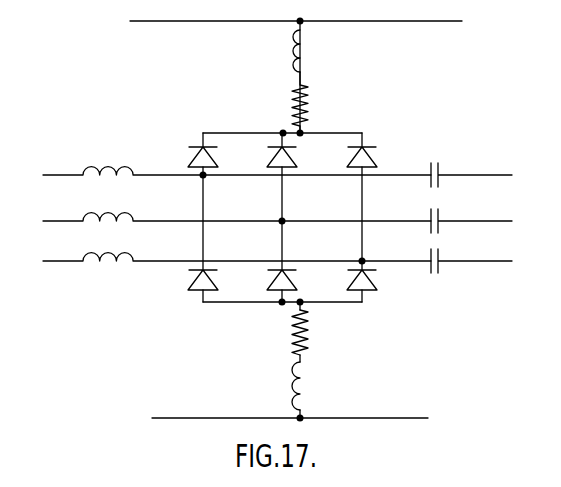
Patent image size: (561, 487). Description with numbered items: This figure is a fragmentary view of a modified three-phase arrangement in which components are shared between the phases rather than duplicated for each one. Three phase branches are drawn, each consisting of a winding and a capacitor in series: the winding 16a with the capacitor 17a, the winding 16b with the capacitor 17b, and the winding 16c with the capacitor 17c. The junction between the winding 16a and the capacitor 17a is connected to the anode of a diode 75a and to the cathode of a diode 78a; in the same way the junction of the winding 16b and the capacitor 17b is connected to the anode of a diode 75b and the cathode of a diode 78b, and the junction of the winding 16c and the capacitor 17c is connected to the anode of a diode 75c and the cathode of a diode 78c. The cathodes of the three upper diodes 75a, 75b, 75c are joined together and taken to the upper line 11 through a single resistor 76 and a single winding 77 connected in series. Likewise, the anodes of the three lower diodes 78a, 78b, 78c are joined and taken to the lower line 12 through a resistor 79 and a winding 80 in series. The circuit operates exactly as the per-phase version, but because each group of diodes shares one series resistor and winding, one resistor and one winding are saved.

The line 11 is at (430, 21).
The line 12 is at (393, 418).
The winding 16a is at (108, 165).
The winding 16b is at (102, 212).
The winding 16c is at (102, 252).
The capacitor 17a is at (440, 160).
The capacitor 17b is at (440, 206).
The capacitor 17c is at (440, 248).
The diode 75a is at (190, 152).
The diode 75b is at (272, 166).
The diode 75c is at (376, 157).
The resistor 76 is at (310, 103).
The winding 77 is at (308, 60).
The diode 78a is at (190, 281).
The diode 78b is at (272, 272).
The diode 78c is at (377, 280).
The resistor 79 is at (309, 342).
The winding 80 is at (309, 402).